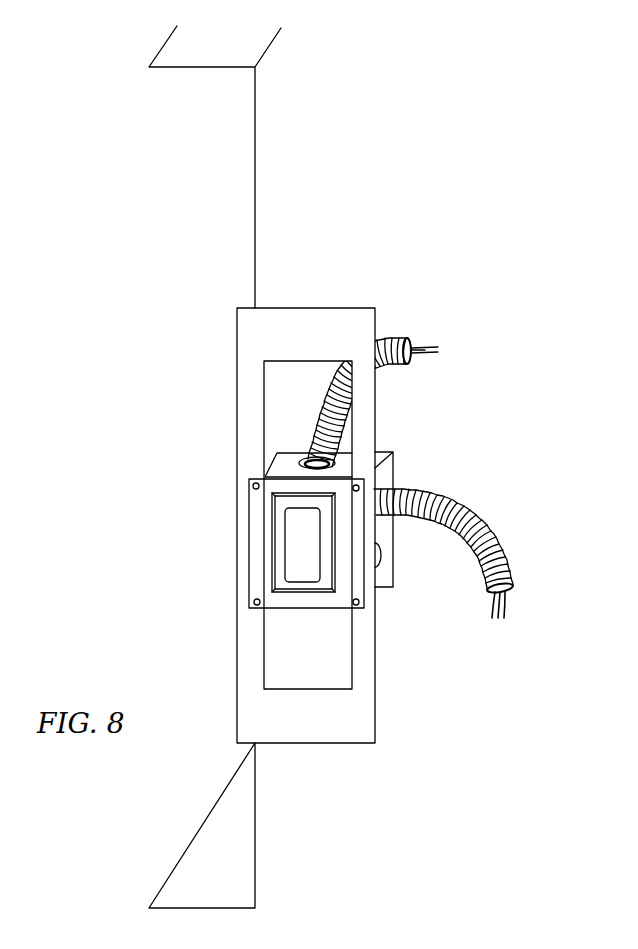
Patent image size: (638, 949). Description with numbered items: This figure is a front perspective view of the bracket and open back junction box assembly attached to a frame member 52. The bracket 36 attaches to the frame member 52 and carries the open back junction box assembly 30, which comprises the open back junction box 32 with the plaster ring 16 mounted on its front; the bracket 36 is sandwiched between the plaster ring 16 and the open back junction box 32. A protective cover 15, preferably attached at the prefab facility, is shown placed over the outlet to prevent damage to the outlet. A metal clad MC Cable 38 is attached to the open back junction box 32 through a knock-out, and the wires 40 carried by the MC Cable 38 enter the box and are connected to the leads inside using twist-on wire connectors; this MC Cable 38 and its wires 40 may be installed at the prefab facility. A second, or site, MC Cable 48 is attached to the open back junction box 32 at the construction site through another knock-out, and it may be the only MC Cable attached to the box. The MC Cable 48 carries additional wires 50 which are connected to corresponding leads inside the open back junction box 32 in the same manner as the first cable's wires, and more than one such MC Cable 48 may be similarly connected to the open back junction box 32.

The protective cover 15 is at (309, 540).
The plaster ring 16 is at (294, 600).
The open back junction box assembly 30 is at (412, 457).
The open back junction box 32 is at (380, 582).
The bracket 36 is at (292, 725).
The MC Cable 38 is at (396, 335).
The wires 40 is at (427, 356).
The second MC Cable 48 is at (431, 538).
The additional wires 50 is at (494, 599).
The frame member 52 is at (212, 250).